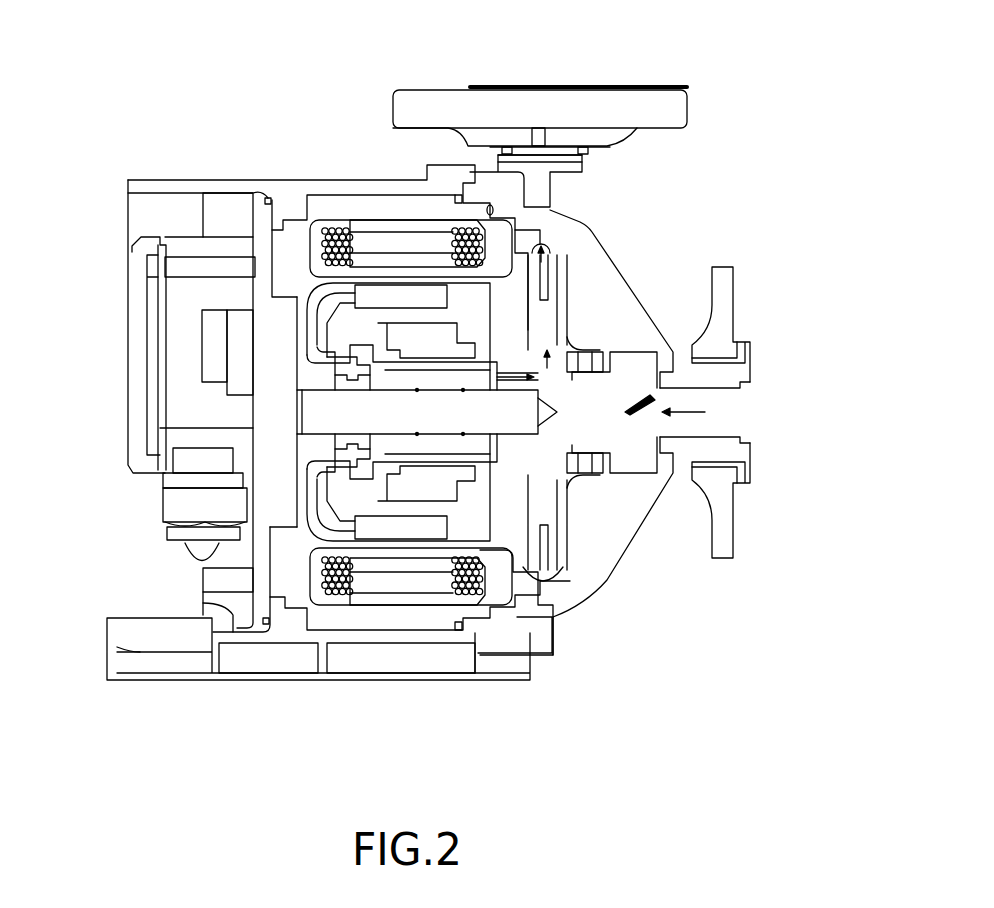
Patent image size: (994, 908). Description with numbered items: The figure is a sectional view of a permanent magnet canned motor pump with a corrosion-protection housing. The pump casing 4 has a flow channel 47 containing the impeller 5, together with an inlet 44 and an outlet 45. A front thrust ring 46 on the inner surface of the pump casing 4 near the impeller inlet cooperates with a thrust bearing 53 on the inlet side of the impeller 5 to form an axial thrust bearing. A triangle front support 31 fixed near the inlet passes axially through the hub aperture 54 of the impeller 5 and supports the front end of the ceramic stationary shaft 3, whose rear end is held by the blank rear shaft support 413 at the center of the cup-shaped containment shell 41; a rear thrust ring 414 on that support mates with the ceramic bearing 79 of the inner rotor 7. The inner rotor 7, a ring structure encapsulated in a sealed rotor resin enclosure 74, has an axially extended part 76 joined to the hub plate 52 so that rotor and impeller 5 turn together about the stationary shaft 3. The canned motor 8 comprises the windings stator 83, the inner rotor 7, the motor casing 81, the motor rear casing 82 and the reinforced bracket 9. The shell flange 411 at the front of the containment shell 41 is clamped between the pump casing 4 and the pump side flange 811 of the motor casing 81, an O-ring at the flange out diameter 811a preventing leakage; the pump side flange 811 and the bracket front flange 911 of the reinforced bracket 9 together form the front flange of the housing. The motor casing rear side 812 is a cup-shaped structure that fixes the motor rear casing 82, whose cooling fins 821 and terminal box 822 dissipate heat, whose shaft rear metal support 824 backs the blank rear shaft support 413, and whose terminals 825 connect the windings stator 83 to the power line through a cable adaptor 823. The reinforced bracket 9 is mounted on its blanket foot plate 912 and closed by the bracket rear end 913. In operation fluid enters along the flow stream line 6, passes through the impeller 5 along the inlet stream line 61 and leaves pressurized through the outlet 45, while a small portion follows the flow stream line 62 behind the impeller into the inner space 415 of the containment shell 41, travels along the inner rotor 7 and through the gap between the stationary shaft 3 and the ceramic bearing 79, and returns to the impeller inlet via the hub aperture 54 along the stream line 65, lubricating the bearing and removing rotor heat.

The stationary shaft 3 is at (330, 413).
The pump casing 4 is at (608, 583).
The impeller 5 is at (557, 283).
The flow stream line 6 is at (687, 395).
The inner rotor 7 is at (392, 270).
The canned motor 8 is at (322, 175).
The reinforced bracket 9 is at (310, 185).
The triangle front support 31 is at (598, 432).
The containment shell 41 is at (532, 600).
The inlet 44 is at (703, 413).
The outlet 45 is at (583, 85).
The front thrust ring 46 is at (587, 358).
The flow channel 47 is at (512, 447).
The hub plate 52 is at (533, 277).
The thrust bearing 53 is at (588, 340).
The hub aperture 54 is at (493, 520).
The inlet stream line 61 is at (577, 393).
The flow stream line 62 is at (553, 248).
The stream line 65 is at (567, 358).
The rotor resin enclosure 74 is at (370, 540).
The axially extended part 76 is at (497, 348).
The ceramic bearing 79 is at (383, 380).
The motor casing 81 is at (337, 205).
The motor rear casing 82 is at (263, 235).
The windings stator 83 is at (300, 247).
The shell flange 411 is at (475, 635).
The blank rear shaft support 413 is at (300, 468).
The rear thrust ring 414 is at (323, 373).
The inner space 415 is at (540, 578).
The pump side flange 811 is at (495, 157).
The flange out diameter 811a is at (457, 197).
The motor casing rear side 812 is at (283, 267).
The cooling fin 821 is at (218, 213).
The terminal box 822 is at (187, 248).
The cable adaptor 823 is at (196, 505).
The shaft rear metal support 824 is at (240, 368).
The terminals 825 is at (217, 327).
The bracket front flange 911 is at (452, 180).
The blanket foot plate 912 is at (437, 655).
The bracket rear end 913 is at (163, 183).